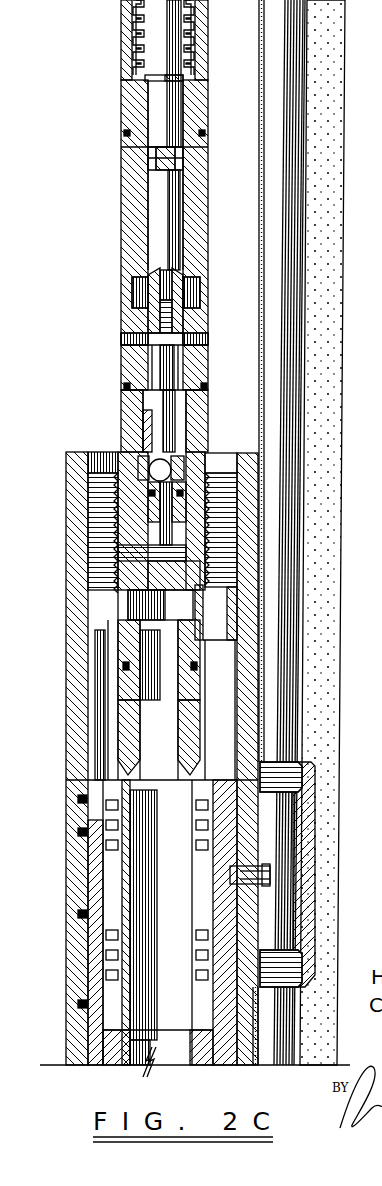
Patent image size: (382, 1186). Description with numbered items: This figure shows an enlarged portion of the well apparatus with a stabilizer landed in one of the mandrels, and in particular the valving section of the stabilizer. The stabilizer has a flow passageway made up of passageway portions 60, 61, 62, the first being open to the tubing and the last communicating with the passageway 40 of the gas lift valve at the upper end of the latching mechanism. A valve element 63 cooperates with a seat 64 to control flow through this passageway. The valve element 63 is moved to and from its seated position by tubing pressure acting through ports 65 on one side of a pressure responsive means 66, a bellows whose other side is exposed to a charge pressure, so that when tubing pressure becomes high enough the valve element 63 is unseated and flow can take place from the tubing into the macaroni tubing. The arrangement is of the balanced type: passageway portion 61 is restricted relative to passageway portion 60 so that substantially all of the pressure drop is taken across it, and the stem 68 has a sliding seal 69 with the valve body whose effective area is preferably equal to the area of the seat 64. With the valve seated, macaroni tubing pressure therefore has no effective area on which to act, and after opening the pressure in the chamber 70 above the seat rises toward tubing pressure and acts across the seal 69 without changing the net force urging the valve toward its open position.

The passageway 40 is at (165, 760).
The passageway portion 60 is at (100, 560).
The passageway portion 61 is at (135, 548).
The passageway portion 62 is at (168, 602).
The valve element 63 is at (133, 510).
The seat 64 is at (113, 497).
The ports 65 is at (130, 339).
The pressure responsive means 66 is at (132, 24).
The stem 68 is at (168, 406).
The sliding seal 69 is at (148, 392).
The chamber 70 is at (148, 440).